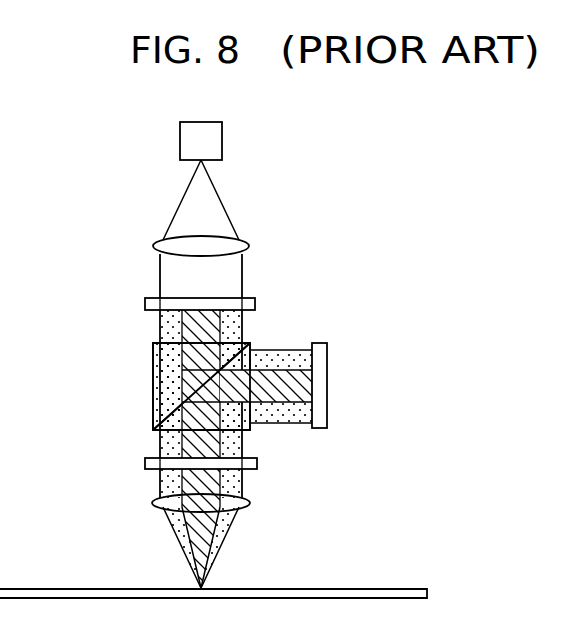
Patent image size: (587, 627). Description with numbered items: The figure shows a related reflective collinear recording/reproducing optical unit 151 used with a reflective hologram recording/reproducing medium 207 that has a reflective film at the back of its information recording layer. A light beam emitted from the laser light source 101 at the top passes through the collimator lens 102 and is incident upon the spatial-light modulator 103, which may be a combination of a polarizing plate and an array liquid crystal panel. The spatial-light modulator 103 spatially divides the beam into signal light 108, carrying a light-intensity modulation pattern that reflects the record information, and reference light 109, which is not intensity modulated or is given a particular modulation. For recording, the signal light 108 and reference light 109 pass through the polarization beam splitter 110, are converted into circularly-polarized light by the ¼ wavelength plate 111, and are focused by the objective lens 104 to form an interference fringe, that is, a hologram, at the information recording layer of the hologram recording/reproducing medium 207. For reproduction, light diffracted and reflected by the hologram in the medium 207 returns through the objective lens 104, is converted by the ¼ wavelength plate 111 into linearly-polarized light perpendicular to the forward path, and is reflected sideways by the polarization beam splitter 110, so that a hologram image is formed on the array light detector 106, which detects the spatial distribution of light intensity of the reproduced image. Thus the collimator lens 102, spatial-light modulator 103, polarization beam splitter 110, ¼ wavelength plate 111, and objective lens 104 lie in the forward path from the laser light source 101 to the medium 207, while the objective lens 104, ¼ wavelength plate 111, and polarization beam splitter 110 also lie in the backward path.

The laser light source 101 is at (222, 140).
The collimator lens 102 is at (249, 248).
The spatial-light modulator 103 is at (255, 303).
The objective lens 104 is at (247, 508).
The array light detector 106 is at (327, 385).
The signal light 108 is at (243, 328).
The reference light 109 is at (172, 333).
The polarization beam splitter 110 is at (153, 386).
The ¼ wavelength plate 111 is at (145, 462).
The reflective recording/reproducing optical unit 151 is at (353, 243).
The reflective hologram recording/reproducing medium 207 is at (380, 589).